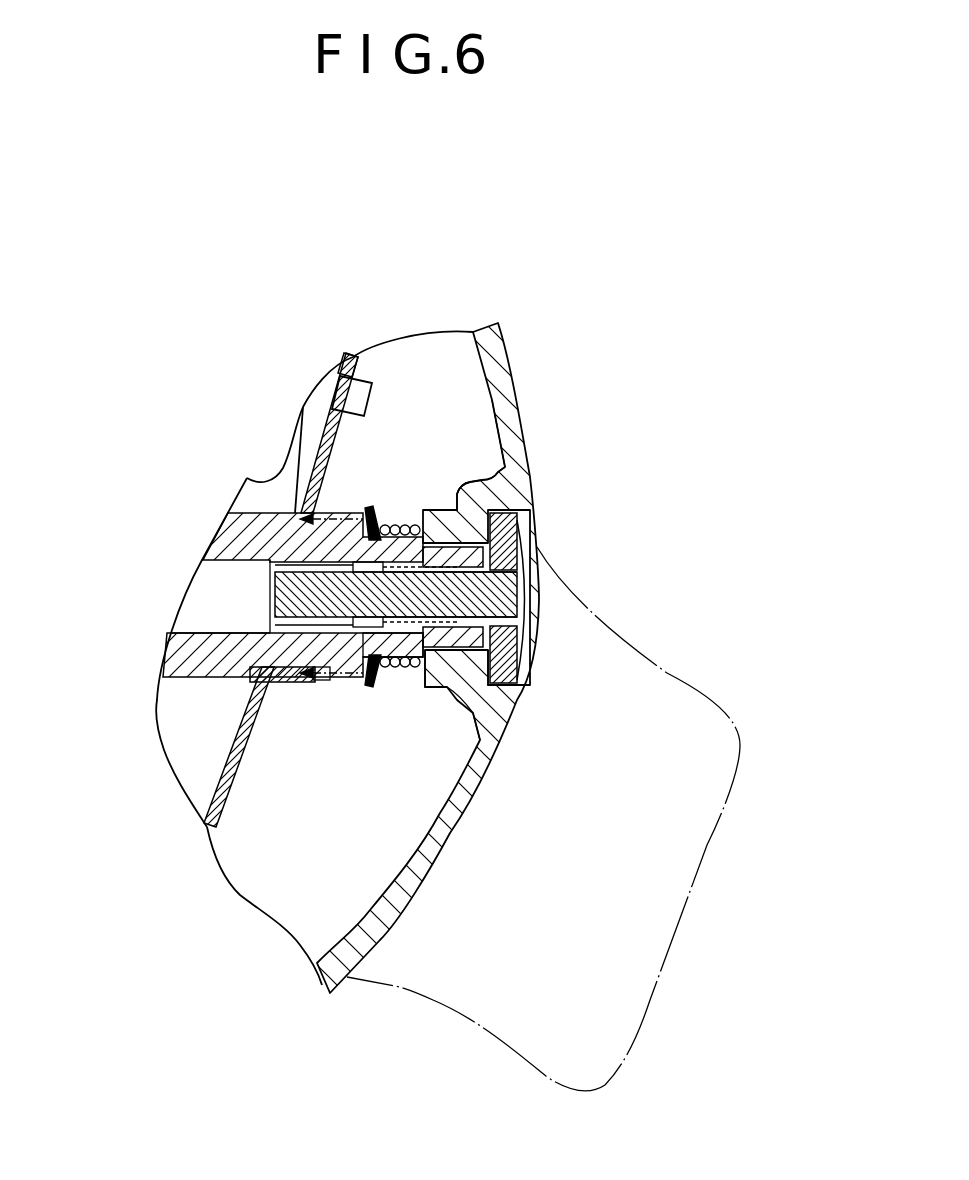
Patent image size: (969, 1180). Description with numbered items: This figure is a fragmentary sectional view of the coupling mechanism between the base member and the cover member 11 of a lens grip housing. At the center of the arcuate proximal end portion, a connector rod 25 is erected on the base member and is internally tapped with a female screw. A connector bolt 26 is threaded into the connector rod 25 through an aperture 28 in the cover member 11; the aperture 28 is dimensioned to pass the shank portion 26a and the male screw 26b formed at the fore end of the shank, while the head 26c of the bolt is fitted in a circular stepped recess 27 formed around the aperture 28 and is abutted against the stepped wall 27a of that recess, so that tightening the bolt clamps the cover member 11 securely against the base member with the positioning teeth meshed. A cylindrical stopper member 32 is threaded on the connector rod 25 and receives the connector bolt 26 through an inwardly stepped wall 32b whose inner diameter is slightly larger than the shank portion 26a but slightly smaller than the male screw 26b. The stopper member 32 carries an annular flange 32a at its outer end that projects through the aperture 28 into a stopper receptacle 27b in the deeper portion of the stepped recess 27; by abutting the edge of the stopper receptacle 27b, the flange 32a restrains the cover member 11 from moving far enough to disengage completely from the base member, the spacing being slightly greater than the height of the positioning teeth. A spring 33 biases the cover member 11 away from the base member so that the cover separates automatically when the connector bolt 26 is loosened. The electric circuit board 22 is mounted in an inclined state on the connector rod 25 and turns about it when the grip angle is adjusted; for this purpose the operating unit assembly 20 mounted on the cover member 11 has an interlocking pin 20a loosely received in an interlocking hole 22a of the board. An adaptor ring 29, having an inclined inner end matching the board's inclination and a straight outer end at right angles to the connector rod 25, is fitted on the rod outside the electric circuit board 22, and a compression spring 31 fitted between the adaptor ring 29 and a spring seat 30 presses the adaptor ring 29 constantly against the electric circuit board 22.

The cover member 11 is at (522, 418).
The operating unit assembly 20 is at (280, 440).
The interlocking pin 20a is at (360, 388).
The electric circuit board 22 is at (225, 736).
The interlocking hole 22a is at (338, 375).
The connector rod 25 is at (178, 648).
The connector bolt 26 is at (537, 597).
The shank portion 26a is at (352, 688).
The male screw 26b is at (280, 560).
The head of the connector bolt 26c is at (508, 548).
The circular stepped recess 27 is at (527, 517).
The stepped wall 27a is at (528, 475).
The stopper receptacle 27b is at (450, 482).
The aperture 28 is at (434, 648).
The adaptor ring 29 is at (270, 684).
The spring seat 30 is at (368, 508).
The compression spring 31 is at (322, 684).
The cylindrical stopper member 32 is at (500, 712).
The annular flange 32a is at (507, 647).
The inwardly stepped wall 32b is at (497, 627).
The spring 33 is at (392, 688).